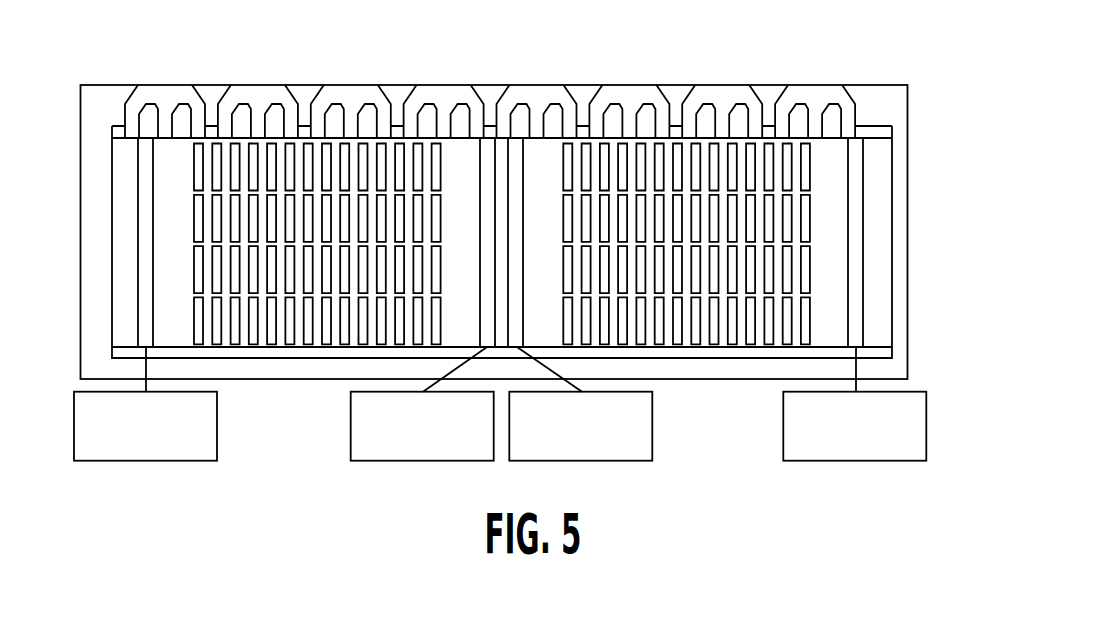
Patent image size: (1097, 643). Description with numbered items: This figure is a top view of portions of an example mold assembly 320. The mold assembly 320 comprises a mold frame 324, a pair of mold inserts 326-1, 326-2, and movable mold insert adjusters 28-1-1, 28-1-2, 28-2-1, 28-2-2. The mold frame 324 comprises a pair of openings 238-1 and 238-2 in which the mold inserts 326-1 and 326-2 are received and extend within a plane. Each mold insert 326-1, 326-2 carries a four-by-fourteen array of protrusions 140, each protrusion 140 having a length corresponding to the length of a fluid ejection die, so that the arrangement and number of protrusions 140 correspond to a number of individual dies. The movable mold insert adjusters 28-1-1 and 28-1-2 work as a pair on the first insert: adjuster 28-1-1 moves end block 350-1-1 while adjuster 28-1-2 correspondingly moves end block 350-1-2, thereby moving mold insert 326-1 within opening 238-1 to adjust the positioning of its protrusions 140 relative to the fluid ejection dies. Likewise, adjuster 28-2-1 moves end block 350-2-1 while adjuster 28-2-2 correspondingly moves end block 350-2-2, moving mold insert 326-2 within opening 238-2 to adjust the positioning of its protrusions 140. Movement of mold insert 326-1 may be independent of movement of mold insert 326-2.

The mold assembly 320 is at (184, 51).
The mold frame 324 is at (112, 161).
The protrusions 140 is at (193, 320).
The opening 238-1 is at (147, 182).
The opening 238-2 is at (848, 315).
The mold insert 326-1 is at (251, 191).
The mold insert 326-2 is at (832, 145).
The end block 350-1-1 is at (132, 98).
The end block 350-1-2 is at (487, 145).
The end block 350-2-1 is at (518, 143).
The end block 350-2-2 is at (857, 142).
The movable mold insert adjuster 28-1-1 is at (132, 461).
The movable mold insert adjuster 28-1-2 is at (412, 461).
The movable mold insert adjuster 28-2-1 is at (582, 461).
The movable mold insert adjuster 28-2-2 is at (840, 461).